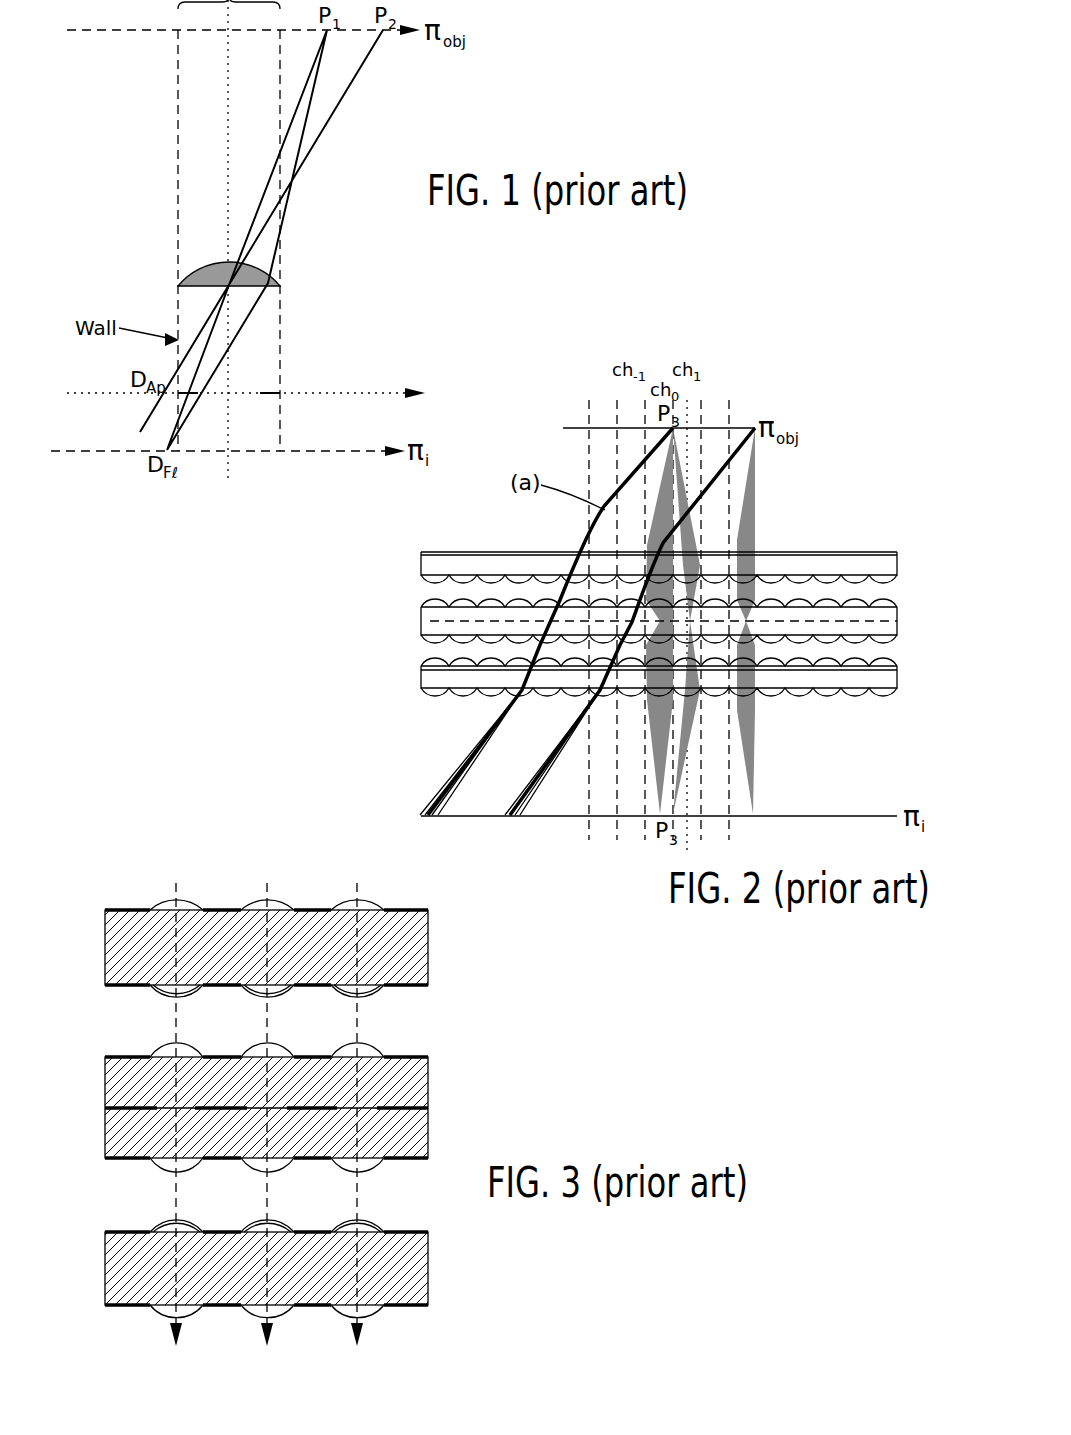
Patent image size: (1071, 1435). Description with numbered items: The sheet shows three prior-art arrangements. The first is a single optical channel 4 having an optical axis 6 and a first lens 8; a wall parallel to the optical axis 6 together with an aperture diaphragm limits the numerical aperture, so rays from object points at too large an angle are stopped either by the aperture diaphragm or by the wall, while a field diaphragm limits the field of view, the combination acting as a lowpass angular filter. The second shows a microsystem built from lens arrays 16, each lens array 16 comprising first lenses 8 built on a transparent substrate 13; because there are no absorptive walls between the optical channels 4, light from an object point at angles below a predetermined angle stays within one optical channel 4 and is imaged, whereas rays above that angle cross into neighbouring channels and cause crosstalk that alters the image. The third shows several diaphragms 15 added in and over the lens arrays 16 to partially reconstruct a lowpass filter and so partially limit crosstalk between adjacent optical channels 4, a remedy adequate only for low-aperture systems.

In FIG. 2, the optical channel 4 is at (659, 581).
In FIG. 3, the optical channel 4 is at (266, 1097).
In FIG. 1, the optical axis 6 is at (228, 77).
In FIG. 2, the optical axis 6 is at (687, 795).
In FIG. 1, the first lens 8 is at (208, 275).
In FIG. 2, the first lens 8 is at (797, 551).
In FIG. 2, the substrate 13 is at (880, 567).
In FIG. 3, the diaphragm 15 is at (110, 915).
In FIG. 2, the lens array 16 is at (412, 566).
In FIG. 3, the lens array 16 is at (400, 950).